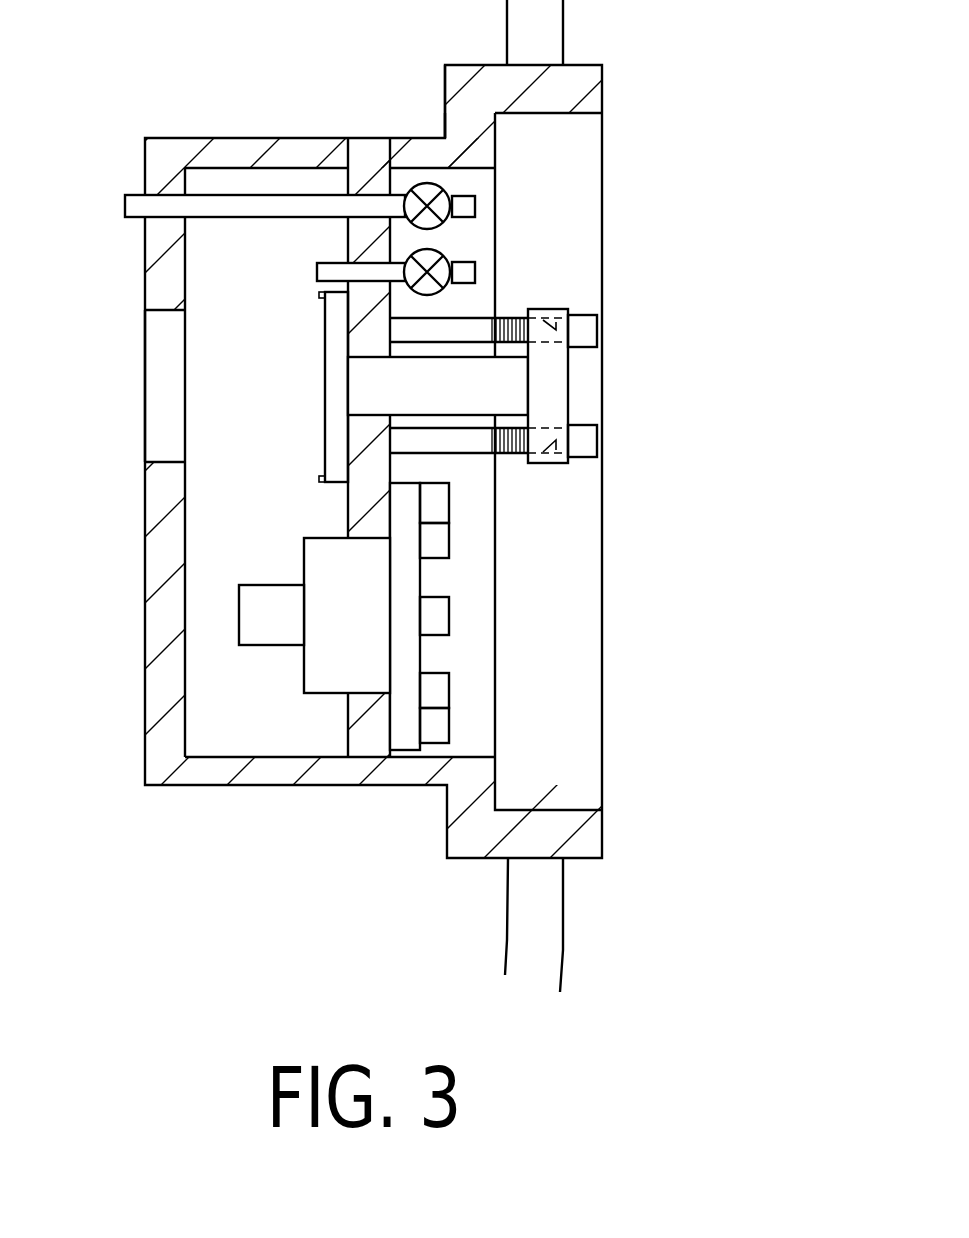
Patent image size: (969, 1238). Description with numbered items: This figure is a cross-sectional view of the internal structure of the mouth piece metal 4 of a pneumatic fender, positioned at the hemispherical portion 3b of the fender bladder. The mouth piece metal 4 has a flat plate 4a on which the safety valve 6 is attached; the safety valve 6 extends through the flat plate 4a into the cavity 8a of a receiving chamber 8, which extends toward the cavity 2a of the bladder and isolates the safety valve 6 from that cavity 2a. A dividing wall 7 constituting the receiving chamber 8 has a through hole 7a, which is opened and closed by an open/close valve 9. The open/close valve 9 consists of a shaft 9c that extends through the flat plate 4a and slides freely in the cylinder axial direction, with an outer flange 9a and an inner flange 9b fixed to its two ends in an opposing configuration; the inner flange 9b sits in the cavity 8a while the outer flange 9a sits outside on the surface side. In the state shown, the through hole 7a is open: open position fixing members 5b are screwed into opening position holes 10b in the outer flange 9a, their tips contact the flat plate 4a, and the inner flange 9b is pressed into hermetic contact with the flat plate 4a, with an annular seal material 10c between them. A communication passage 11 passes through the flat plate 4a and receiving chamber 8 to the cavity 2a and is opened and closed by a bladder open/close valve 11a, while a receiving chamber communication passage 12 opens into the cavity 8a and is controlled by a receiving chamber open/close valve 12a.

The cavity 2a is at (80, 795).
The hemispherical portion 3b is at (557, 912).
The mouth piece metal 4 is at (610, 212).
The flat plate 4a is at (363, 502).
The open position fixing members 5b is at (588, 330).
The safety valve 6 is at (308, 662).
The dividing wall 7 is at (157, 632).
The through hole 7a is at (153, 457).
The receiving chamber 8 is at (302, 783).
The cavity of the receiving chamber 8a is at (220, 744).
The open/close valve 9 is at (450, 416).
The outer flange 9a is at (608, 375).
The inner flange 9b is at (330, 377).
The shaft 9c is at (463, 365).
The opening position holes 10b is at (555, 310).
The seal material 10c is at (320, 295).
The communication passage 11 is at (135, 220).
The bladder open/close valve 11a is at (450, 198).
The receiving chamber communication passage 12 is at (320, 274).
The receiving chamber open/close valve 12a is at (463, 250).